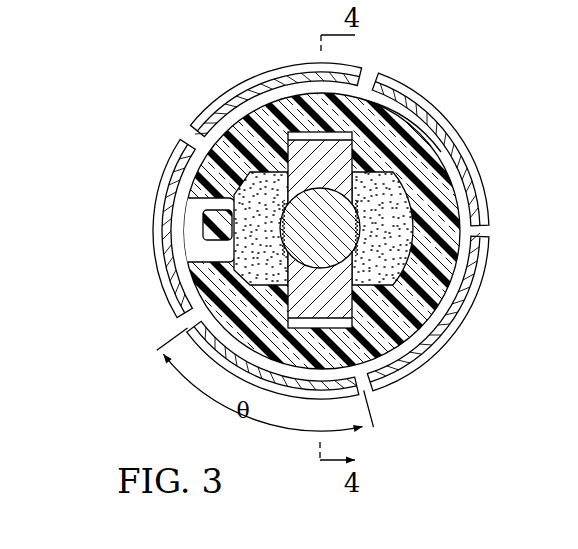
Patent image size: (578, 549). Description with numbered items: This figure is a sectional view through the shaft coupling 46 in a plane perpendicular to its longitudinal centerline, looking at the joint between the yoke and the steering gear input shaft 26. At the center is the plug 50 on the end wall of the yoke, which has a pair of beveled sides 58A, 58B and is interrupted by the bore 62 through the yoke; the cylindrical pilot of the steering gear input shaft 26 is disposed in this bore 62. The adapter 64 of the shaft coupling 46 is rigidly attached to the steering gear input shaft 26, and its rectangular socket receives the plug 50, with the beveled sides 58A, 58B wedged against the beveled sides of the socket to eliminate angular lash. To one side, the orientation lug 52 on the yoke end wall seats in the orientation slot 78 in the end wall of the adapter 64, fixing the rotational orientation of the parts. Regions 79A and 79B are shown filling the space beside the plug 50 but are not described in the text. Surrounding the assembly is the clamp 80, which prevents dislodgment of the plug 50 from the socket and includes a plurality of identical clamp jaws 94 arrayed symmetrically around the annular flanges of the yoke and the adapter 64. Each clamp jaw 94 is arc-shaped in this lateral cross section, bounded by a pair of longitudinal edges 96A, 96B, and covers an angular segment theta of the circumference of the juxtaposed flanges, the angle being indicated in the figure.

The steering gear input shaft 26 is at (354, 241).
The shaft coupling 46 is at (310, 223).
The plug 50 is at (357, 295).
The orientation lug 52 is at (205, 222).
The beveled side 58A is at (293, 150).
The beveled side 58B is at (358, 150).
The bore 62 is at (340, 198).
The adapter 64 is at (398, 112).
The orientation slot 78 is at (200, 208).
The first filler 79A is at (292, 188).
The second filler 79B is at (340, 308).
The clamp 80 is at (312, 223).
The clamp jaw 94 is at (222, 88).
The longitudinal edge 96A is at (198, 142).
The longitudinal edge 96B is at (365, 88).